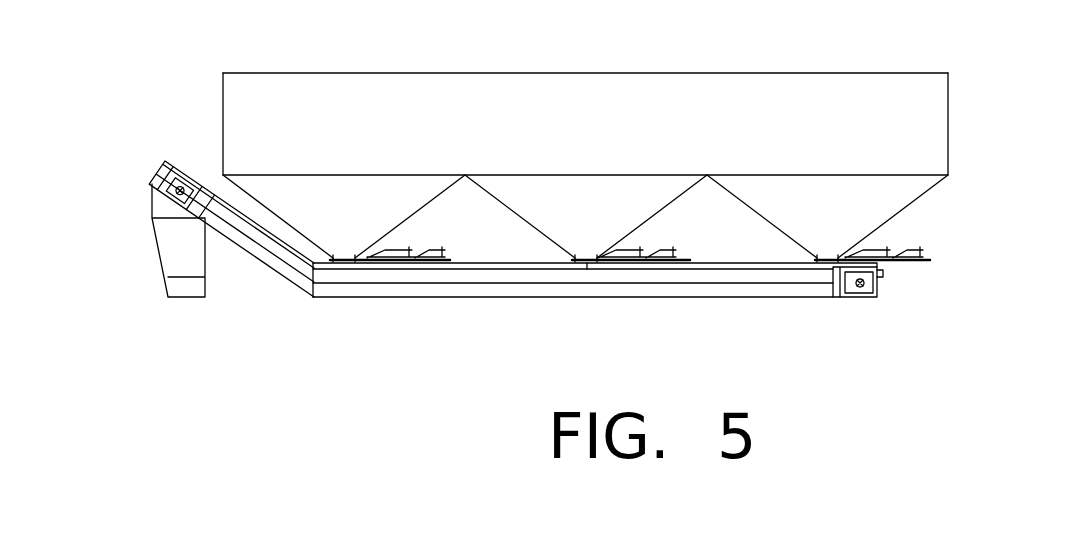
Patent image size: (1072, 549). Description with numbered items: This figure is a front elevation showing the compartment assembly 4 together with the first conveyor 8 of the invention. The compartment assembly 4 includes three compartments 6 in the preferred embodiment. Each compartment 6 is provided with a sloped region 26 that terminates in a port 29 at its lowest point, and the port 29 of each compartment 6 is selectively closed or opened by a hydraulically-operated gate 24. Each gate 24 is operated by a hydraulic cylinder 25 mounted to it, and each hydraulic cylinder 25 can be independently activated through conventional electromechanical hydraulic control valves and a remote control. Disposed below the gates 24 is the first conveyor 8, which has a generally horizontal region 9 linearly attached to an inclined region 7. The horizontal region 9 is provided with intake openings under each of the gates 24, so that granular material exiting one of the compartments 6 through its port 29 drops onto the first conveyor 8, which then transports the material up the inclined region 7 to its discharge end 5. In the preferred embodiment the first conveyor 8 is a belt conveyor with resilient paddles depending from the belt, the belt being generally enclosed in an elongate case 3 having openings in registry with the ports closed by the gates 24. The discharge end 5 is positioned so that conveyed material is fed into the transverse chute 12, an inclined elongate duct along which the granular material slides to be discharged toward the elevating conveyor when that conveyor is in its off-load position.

The elongate case 3 is at (805, 297).
The compartment assembly 4 is at (946, 118).
The discharge end 5 is at (174, 163).
The compartments 6 is at (302, 78).
The inclined region 7 is at (260, 247).
The first conveyor 8 is at (740, 287).
The horizontal region 9 is at (505, 291).
The transverse chute 12 is at (183, 248).
The gates 24 is at (368, 260).
The hydraulic cylinders 25 is at (425, 260).
The sloped regions 26 is at (400, 207).
The port 29 is at (315, 290).